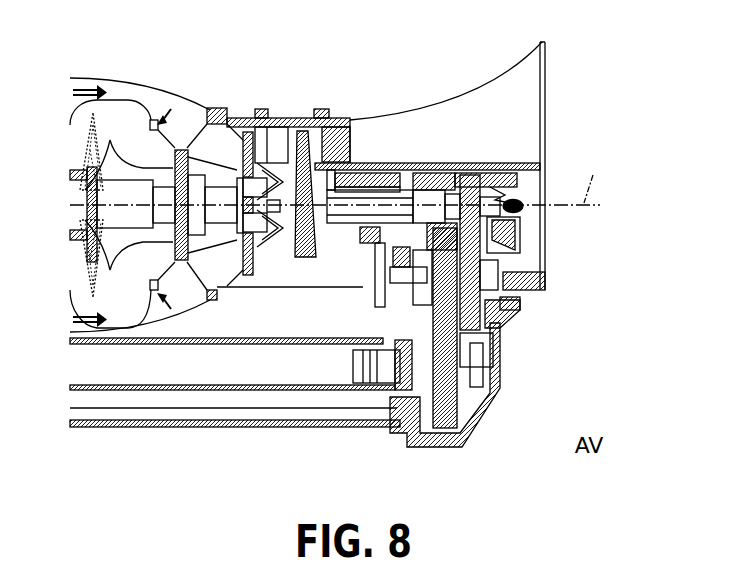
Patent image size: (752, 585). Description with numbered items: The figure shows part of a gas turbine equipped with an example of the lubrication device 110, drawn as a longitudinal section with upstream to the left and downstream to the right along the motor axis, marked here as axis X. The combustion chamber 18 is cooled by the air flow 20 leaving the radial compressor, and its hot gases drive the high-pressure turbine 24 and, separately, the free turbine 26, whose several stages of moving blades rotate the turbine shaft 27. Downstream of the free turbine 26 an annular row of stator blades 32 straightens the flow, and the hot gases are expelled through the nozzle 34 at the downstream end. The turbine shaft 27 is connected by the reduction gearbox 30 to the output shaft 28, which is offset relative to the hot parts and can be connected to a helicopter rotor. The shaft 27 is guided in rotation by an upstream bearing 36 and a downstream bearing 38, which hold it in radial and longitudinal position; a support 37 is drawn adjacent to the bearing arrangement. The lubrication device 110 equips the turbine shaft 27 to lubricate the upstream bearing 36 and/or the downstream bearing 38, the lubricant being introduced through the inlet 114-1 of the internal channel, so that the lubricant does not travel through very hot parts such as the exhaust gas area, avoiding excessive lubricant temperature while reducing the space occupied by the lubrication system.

The combustion chamber 18 is at (105, 303).
The air flow 20 is at (178, 300).
The high-pressure turbine 24 is at (175, 157).
The free turbine 26 is at (306, 135).
The turbine shaft 27 is at (361, 190).
The output shaft 28 is at (272, 373).
The reduction gearbox 30 is at (487, 323).
The annular row of stator blades 32 is at (282, 123).
The nozzle 34 is at (485, 97).
The upstream bearing 36 is at (335, 252).
The bearing support 37 is at (487, 253).
The downstream bearing 38 is at (410, 182).
The lubrication device 110 is at (532, 183).
The inlet 114-1 is at (522, 207).
The axis X is at (594, 176).